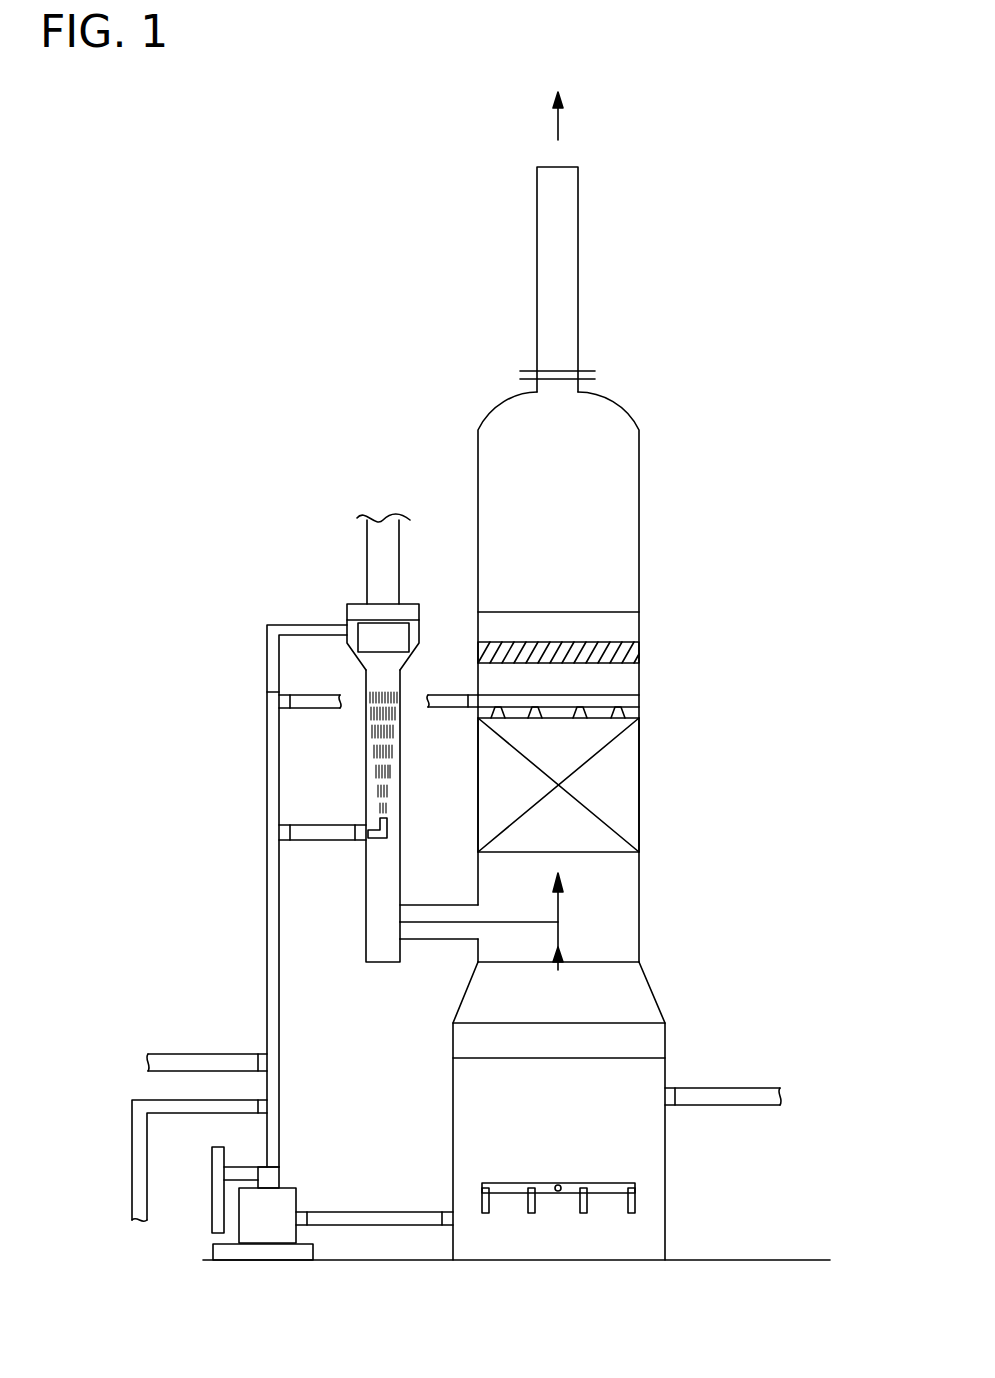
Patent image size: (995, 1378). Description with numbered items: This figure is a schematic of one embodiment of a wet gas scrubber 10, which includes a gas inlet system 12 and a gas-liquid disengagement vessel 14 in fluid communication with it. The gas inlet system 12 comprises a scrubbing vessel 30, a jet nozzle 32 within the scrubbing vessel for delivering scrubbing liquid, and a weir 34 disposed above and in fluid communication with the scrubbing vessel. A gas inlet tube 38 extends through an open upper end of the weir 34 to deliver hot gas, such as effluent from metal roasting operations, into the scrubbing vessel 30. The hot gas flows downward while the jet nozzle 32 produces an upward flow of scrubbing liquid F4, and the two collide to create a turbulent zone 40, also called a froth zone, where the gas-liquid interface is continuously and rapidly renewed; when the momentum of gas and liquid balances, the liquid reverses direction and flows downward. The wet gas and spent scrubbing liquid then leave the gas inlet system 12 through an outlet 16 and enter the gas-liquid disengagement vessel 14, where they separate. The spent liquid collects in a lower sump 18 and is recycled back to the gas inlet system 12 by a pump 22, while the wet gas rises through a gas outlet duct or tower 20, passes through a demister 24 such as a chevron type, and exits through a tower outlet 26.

The wet gas scrubber 10 is at (753, 248).
The gas inlet system 12 is at (312, 590).
The gas-liquid disengagement vessel 14 is at (683, 632).
The outlet 16 is at (442, 940).
The lower sump 18 is at (653, 1170).
The gas outlet duct or tower 20 is at (641, 775).
The pump 22 is at (296, 1232).
The demister 24 is at (637, 655).
The tower outlet 26 is at (572, 328).
The scrubbing vessel 30 is at (362, 905).
The jet nozzle 32 is at (390, 835).
The weir 34 is at (415, 653).
The gas inlet tube 38 is at (400, 538).
The turbulent zone 40 is at (385, 683).
The upward flow of scrubbing liquid F4 is at (392, 752).